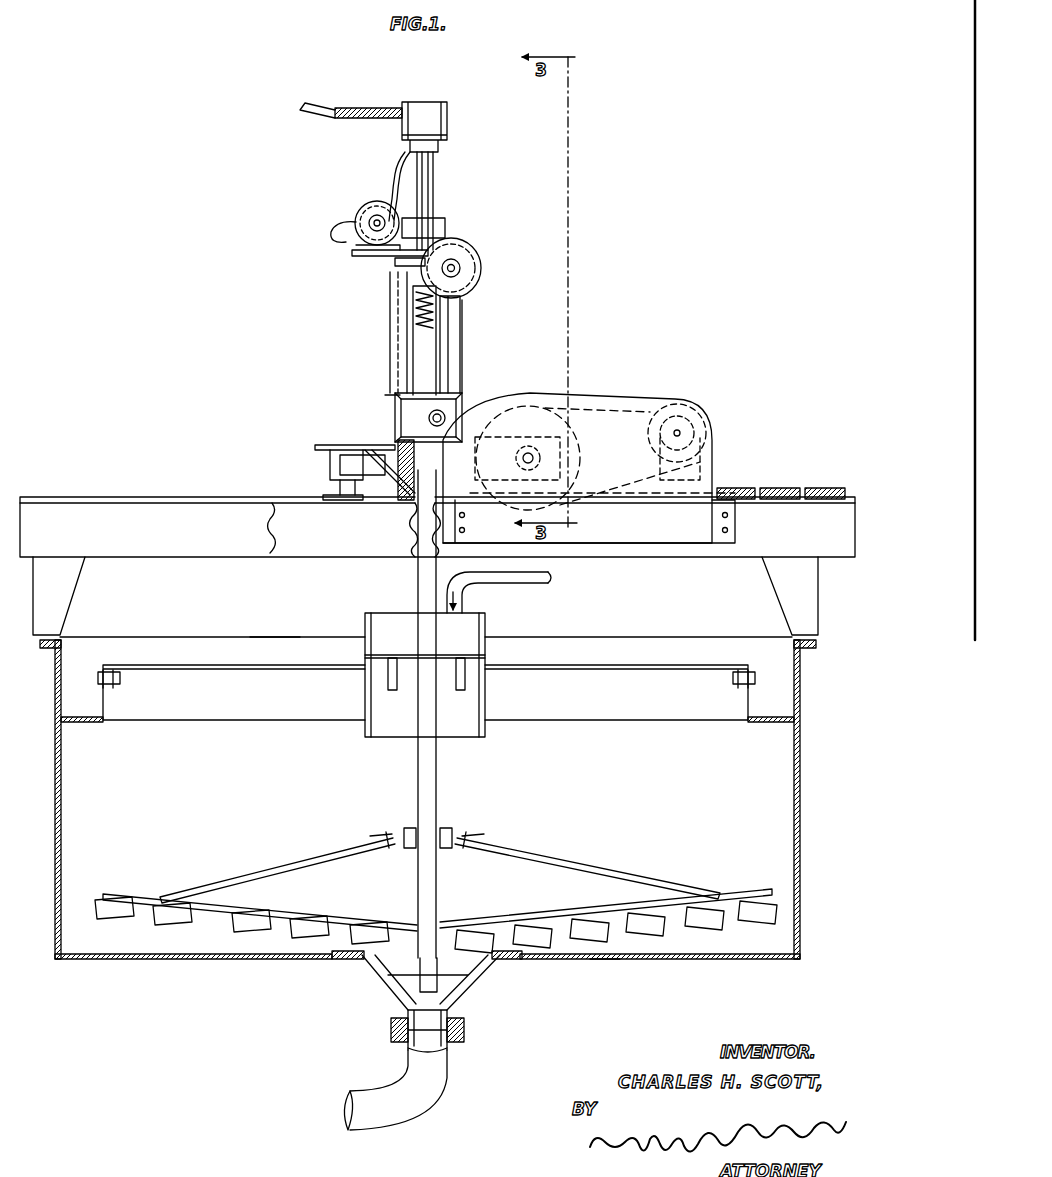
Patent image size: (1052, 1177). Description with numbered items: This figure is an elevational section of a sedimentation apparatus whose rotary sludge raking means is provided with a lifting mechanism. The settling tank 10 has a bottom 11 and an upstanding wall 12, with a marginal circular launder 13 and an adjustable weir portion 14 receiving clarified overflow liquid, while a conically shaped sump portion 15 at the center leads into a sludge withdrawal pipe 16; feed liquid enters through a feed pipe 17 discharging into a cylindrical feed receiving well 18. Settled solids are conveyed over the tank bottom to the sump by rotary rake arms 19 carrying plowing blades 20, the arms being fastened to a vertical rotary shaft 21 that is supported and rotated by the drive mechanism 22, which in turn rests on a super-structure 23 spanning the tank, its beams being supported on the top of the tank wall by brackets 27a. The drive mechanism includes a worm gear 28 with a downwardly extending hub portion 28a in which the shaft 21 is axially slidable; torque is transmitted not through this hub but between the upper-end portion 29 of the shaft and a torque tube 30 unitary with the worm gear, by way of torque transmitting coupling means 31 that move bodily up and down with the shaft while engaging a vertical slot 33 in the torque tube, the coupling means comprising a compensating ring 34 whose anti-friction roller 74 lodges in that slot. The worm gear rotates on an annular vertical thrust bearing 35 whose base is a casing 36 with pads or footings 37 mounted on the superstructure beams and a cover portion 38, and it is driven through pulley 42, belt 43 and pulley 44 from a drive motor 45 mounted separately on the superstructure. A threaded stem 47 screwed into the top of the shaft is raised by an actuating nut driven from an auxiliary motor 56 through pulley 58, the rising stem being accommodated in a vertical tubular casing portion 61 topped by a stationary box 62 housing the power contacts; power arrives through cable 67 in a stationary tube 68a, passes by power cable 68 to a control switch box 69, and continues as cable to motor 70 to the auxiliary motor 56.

The settling tank 10 is at (268, 636).
The bottom 11 is at (616, 961).
The upstanding wall 12 is at (800, 815).
The marginal circular launder 13 is at (748, 704).
The adjustable weir portion 14 is at (748, 672).
The conically shaped sump portion 15 is at (470, 990).
The sludge withdrawal pipe 16 is at (438, 1100).
The feed pipe 17 is at (518, 585).
The cylindrical feed receiving well 18 is at (365, 620).
The rotary rake arms 19 is at (298, 912).
The plowing blades 20 is at (712, 917).
The vertical rotary shaft 21 is at (437, 796).
The drive mechanism 22 is at (383, 405).
The super-structure 23 is at (208, 496).
The brackets 27a is at (76, 559).
The worm gear 28 is at (340, 467).
The hub portion 28a is at (400, 500).
The upper-end portion 29 is at (408, 384).
The torque tube 30 is at (460, 337).
The torque transmitting coupling means 31 is at (400, 416).
The vertical slot 33 is at (420, 332).
The compensating ring 34 is at (460, 387).
The annular vertical thrust bearing 35 is at (335, 484).
The casing 36 is at (330, 460).
The pads or footings 37 is at (335, 500).
The cover portion 38 is at (325, 446).
The pulley 42 is at (578, 424).
The belt 43 is at (615, 492).
The pulley 44 is at (653, 405).
The drive motor 45 is at (714, 430).
The threaded stem 47 is at (400, 347).
The auxiliary motor 56 is at (373, 206).
The pulley 58 is at (477, 251).
The vertical tubular casing portion 61 is at (433, 180).
The stationary box 62 is at (450, 124).
The cable 67 is at (317, 116).
The power cable 68 is at (395, 155).
The stationary tube 68a is at (377, 112).
The control switch box 69 is at (437, 238).
The cable to motor 70 is at (340, 225).
The anti-friction roller 74 is at (445, 412).